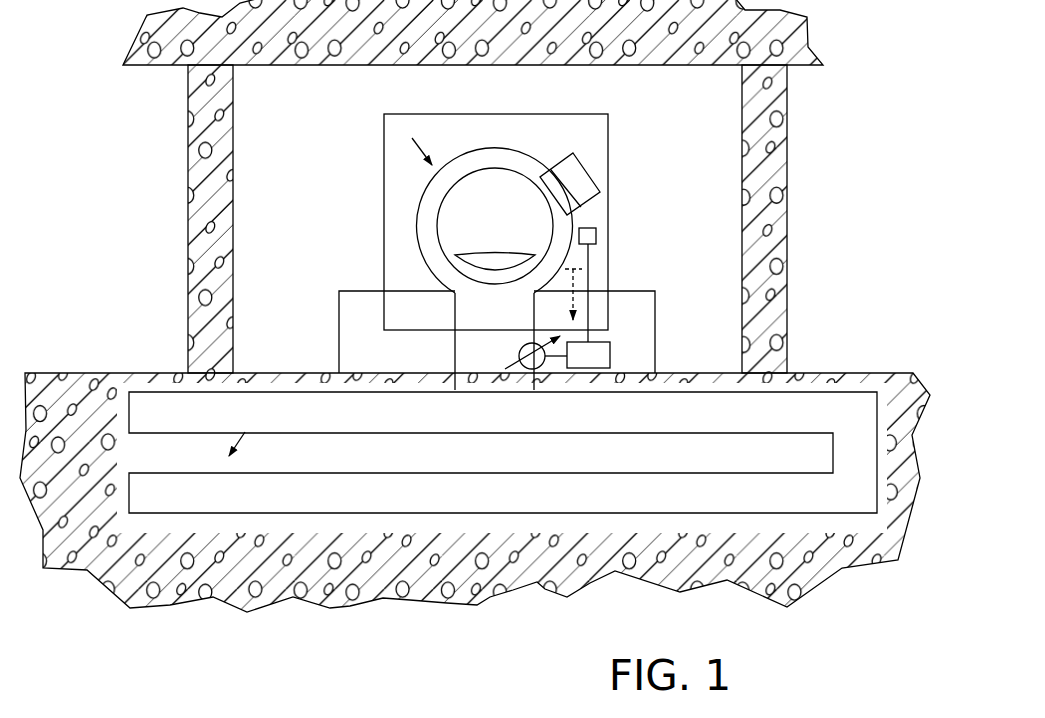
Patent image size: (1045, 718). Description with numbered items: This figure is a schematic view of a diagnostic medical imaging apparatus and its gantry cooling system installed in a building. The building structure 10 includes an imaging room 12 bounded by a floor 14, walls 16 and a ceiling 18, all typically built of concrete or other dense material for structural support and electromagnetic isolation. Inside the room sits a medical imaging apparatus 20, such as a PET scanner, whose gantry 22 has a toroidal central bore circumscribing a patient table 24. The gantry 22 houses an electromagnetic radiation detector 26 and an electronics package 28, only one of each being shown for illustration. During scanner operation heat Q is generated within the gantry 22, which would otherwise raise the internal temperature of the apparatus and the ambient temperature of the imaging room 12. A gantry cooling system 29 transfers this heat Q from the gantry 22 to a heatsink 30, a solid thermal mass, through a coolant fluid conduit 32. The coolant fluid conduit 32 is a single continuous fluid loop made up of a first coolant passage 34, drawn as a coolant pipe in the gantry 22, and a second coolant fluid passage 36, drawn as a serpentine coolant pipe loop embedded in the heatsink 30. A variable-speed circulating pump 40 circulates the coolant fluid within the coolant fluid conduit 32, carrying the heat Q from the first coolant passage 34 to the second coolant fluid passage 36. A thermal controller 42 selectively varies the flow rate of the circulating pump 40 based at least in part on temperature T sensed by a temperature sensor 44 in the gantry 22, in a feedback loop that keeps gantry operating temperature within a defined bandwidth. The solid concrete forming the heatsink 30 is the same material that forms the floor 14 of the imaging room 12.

The building structure 10 is at (475, 326).
The imaging room 12 is at (475, 326).
The floor 14 is at (803, 368).
The walls 16 is at (293, 211).
The ceiling 18 is at (266, 52).
The medical imaging apparatus 20 is at (655, 313).
The gantry 22 is at (382, 200).
The patient table 24 is at (490, 260).
The electromagnetic radiation detector 26 is at (575, 210).
The electronics package 28 is at (585, 160).
The gantry cooling system 29 is at (465, 135).
The heatsink 30 is at (842, 567).
The coolant fluid conduit 32 is at (453, 313).
The first coolant passage 34 is at (517, 148).
The second coolant fluid passage 36 is at (557, 515).
The variable-speed circulating pump 40 is at (517, 347).
The thermal controller 42 is at (598, 357).
The temperature sensor 44 is at (596, 235).